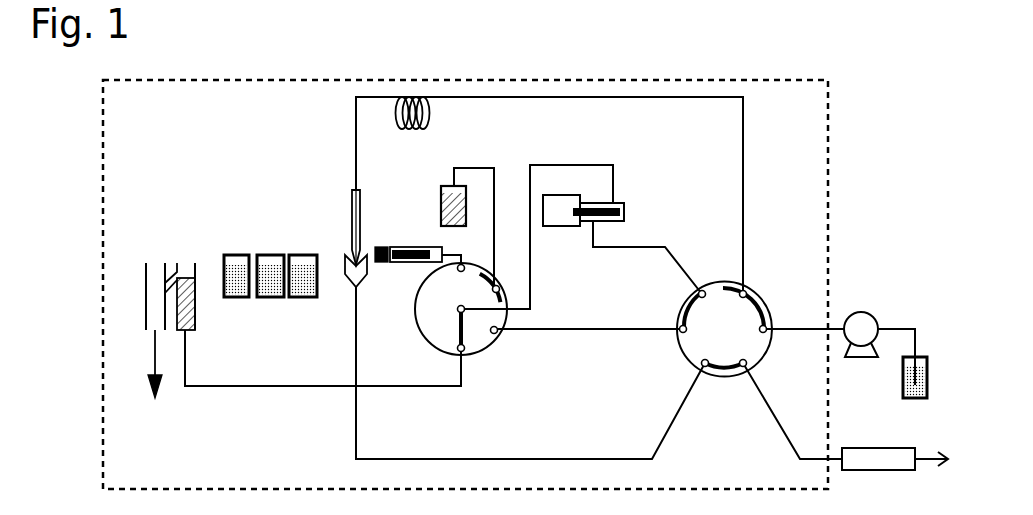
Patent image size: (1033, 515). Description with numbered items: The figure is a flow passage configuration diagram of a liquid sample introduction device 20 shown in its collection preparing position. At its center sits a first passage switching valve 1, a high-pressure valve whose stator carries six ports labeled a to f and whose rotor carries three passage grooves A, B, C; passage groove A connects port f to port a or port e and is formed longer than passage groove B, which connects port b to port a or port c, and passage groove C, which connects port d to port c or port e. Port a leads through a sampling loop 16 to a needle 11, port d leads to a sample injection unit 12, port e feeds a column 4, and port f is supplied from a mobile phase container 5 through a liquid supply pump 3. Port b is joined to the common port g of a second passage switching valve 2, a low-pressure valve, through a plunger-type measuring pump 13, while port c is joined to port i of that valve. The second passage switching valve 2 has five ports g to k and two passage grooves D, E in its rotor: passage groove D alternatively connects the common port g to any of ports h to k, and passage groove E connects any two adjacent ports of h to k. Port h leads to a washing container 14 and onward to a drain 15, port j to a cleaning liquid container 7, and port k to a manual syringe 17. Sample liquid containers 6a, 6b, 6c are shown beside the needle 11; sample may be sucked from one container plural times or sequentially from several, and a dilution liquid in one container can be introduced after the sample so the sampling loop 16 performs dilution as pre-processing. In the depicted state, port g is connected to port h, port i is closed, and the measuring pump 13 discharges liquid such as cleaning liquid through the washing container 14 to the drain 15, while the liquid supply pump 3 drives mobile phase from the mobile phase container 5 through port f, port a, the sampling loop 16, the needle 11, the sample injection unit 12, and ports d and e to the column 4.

The first passage switching valve 1 is at (723, 337).
The second passage switching valve 2 is at (457, 315).
The liquid supply pump 3 is at (876, 317).
The column 4 is at (880, 447).
The mobile phase container 5 is at (903, 392).
The sample liquid container 6a is at (305, 298).
The sample liquid container 6b is at (272, 298).
The sample liquid container 6c is at (238, 298).
The cleaning liquid container 7 is at (440, 207).
The needle 11 is at (361, 198).
The sample injection unit 12 is at (360, 290).
The measuring pump 13 is at (560, 226).
The washing container 14 is at (196, 322).
The drain 15 is at (145, 312).
The sampling loop 16 is at (430, 120).
The manual syringe 17 is at (425, 247).
The liquid sample introduction device 20 is at (828, 118).
The passage groove A is at (760, 297).
The passage groove B is at (680, 314).
The passage groove C is at (732, 374).
The passage groove D is at (483, 343).
The passage groove E is at (505, 285).